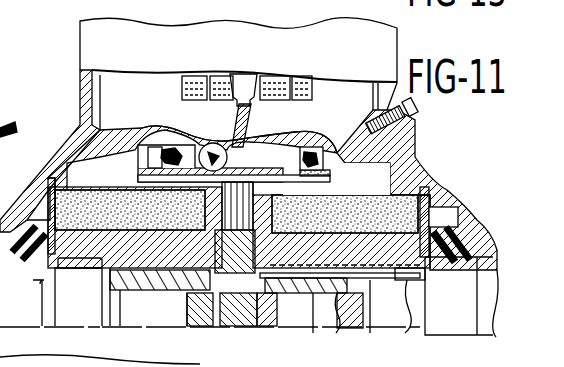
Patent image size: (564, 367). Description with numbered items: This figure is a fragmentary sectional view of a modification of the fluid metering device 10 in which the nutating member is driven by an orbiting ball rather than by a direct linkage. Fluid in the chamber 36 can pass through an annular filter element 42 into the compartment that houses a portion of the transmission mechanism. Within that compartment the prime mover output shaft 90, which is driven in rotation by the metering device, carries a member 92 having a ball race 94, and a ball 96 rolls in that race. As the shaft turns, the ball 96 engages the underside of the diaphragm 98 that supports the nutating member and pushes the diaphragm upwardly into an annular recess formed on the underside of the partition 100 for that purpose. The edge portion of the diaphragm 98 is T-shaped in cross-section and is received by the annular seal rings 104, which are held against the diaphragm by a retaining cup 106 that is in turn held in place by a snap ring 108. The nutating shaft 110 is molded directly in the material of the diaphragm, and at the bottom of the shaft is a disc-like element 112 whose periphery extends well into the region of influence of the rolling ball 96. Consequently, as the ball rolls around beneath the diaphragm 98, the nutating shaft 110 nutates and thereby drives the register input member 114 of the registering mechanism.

The housing assembly 10 is at (198, 54).
The chamber 36 is at (447, 214).
The annular filter element 42 is at (440, 200).
The prime mover output shaft 90 is at (247, 213).
The member 92 is at (158, 182).
The ball race 94 is at (290, 133).
The ball 96 is at (195, 138).
The diaphragm 98 is at (150, 133).
The partition 100 is at (337, 124).
The annular seal rings 104 is at (138, 146).
The retaining cup 106 is at (333, 165).
The snap ring 108 is at (290, 183).
The nutating shaft 110 is at (250, 112).
The disc-like element 112 is at (8, 143).
The register input member 114 is at (237, 101).